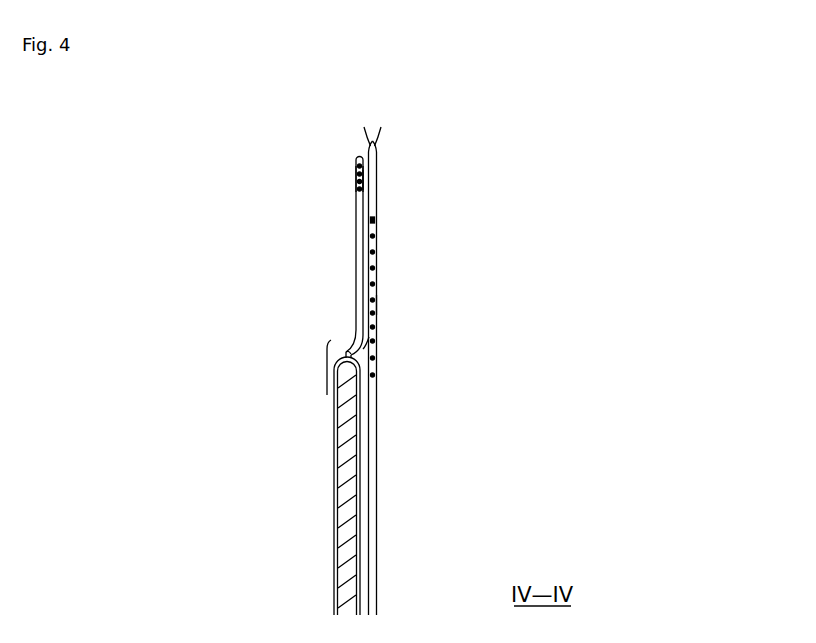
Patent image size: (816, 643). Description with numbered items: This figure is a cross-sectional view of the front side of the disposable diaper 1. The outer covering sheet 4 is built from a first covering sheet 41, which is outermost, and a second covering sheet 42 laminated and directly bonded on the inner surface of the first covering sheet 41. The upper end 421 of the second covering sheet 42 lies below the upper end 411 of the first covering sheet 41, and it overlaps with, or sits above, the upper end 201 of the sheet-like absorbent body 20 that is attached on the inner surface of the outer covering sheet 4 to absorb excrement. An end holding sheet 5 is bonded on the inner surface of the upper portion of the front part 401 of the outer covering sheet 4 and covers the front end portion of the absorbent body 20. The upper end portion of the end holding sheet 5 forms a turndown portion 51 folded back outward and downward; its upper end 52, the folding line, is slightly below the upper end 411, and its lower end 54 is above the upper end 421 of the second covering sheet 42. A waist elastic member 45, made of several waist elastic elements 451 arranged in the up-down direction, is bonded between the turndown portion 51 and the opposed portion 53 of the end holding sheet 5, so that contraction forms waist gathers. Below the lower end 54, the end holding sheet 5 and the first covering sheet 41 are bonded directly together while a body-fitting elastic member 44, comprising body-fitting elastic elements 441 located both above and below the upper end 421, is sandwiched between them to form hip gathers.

The disposable diaper 1 is at (185, 103).
The outer covering sheet 4 is at (438, 366).
The end holding sheet 5 is at (344, 230).
The absorbent body 20 is at (315, 466).
The upper end of the absorbent body 201 is at (347, 338).
The first covering sheet 41 is at (378, 428).
The second covering sheet 42 is at (369, 449).
The body-fitting elastic member 44 is at (429, 307).
The waist elastic member 45 is at (344, 158).
The turndown portion 51 is at (366, 178).
The upper end of the turndown portion 52 is at (359, 150).
The portion of the end holding sheet opposed to the turndown portion 53 is at (357, 176).
The lower end of the turndown portion 54 is at (377, 223).
The front part 401 is at (383, 304).
The upper end of the first covering sheet 411 is at (379, 136).
The upper end of the second covering sheet 421 is at (378, 327).
The body-fitting elastic elements 441 is at (377, 255).
The waist elastic elements 451 is at (357, 166).